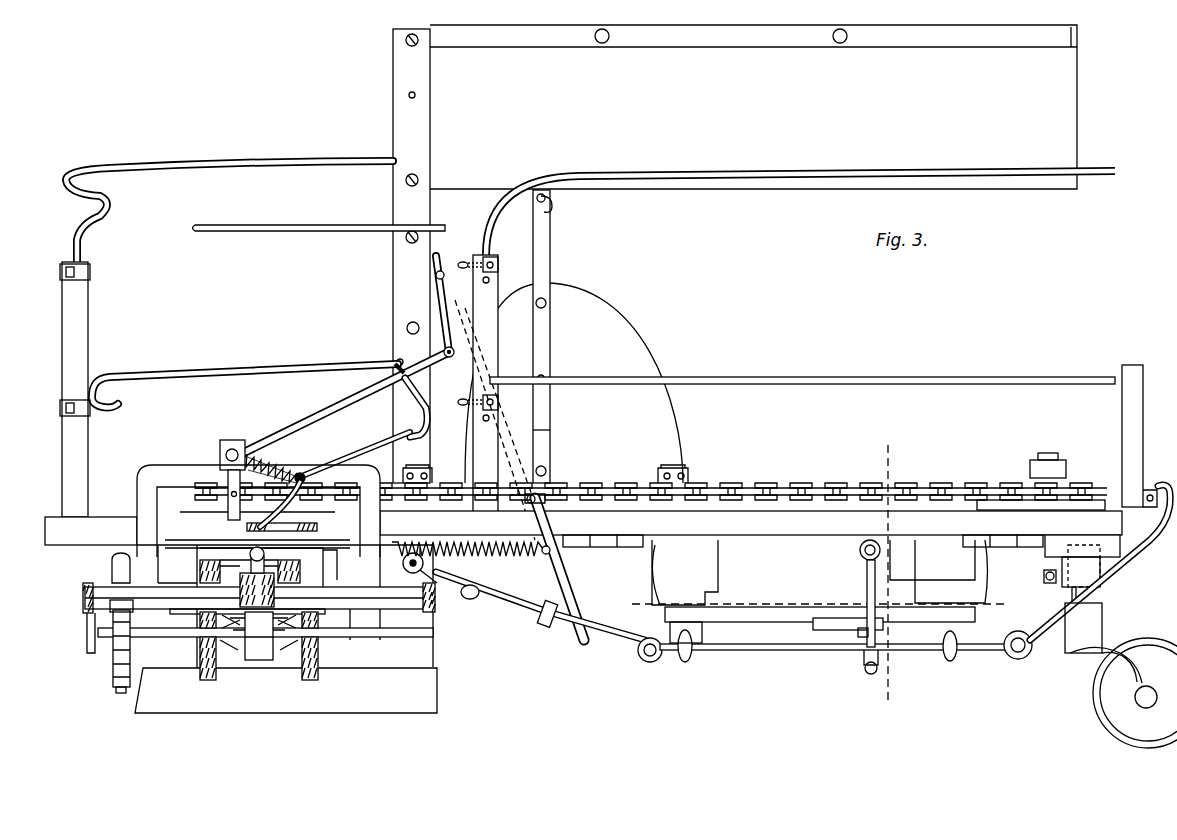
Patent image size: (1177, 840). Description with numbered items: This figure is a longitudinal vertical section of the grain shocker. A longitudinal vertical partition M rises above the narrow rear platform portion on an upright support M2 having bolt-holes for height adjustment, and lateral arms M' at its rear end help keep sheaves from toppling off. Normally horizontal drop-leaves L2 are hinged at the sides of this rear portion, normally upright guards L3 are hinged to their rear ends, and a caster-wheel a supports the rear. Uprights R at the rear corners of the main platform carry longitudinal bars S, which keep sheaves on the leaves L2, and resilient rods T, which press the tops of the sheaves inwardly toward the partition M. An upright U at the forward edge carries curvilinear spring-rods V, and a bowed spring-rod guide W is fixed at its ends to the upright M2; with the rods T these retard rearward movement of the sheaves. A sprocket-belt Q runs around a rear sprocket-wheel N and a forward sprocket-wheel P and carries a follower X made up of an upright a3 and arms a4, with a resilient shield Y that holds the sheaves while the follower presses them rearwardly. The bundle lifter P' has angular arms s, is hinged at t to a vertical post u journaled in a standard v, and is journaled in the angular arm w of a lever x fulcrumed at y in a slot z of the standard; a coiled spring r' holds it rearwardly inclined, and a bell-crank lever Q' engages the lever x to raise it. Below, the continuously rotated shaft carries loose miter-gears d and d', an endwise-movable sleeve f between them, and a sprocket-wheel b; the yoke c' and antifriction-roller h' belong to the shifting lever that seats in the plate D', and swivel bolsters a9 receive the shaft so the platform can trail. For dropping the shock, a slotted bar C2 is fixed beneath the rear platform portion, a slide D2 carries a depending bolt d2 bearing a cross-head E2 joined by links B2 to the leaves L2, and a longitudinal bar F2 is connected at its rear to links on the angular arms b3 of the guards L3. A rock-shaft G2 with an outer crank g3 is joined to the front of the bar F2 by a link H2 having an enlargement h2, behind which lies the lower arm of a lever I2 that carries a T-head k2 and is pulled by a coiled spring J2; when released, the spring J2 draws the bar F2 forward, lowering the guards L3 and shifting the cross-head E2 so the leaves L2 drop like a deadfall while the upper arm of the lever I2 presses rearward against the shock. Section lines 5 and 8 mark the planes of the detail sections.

The longitudinal vertical partition M is at (753, 107).
The lateral arms M' is at (1050, 53).
The upright support M2 is at (432, 174).
The resilient rods T is at (850, 178).
The curvilinear spring-rods V is at (180, 168).
The guide W is at (340, 232).
The upright U is at (90, 466).
The resilient shield Y is at (680, 428).
The follower X is at (552, 344).
The arms a4 is at (550, 205).
The upright a3 is at (555, 436).
The uprights R is at (494, 357).
The longitudinal bars S is at (760, 386).
The guards L3 is at (1145, 464).
The T-head k2 is at (443, 262).
The bundle lifter P' is at (346, 402).
The angular arms s is at (448, 358).
The angular arm w is at (430, 412).
The lever x is at (422, 444).
The slot z is at (336, 468).
The standard v is at (372, 470).
The hinged connection t is at (231, 441).
The coiled spring r' is at (272, 443).
The fulcrum y is at (302, 474).
The sprocket-belt Q is at (651, 478).
The sprocket-wheel N is at (1068, 480).
The drop-leaves L2 is at (750, 527).
The sprocket-wheel P is at (199, 458).
The vertical post u is at (232, 512).
The bell-crank lever Q' is at (296, 511).
The miter-gear d is at (286, 712).
The swivel bolsters a9 is at (185, 558).
The antifriction-roller h' is at (250, 631).
The plate D' is at (258, 622).
The sleeve f is at (257, 645).
The yoke c' is at (262, 652).
The miter-gear d' is at (260, 655).
The rock-shaft G2 is at (410, 575).
The sprocket-wheel b is at (122, 694).
The coiled spring J2 is at (497, 562).
The lever I2 is at (565, 576).
The link H2 is at (470, 602).
The outer crank g3 is at (463, 603).
The enlargement h2 is at (550, 634).
The slotted bar C2 is at (712, 562).
The longitudinal bar F2 is at (775, 640).
The section line 8 is at (810, 602).
The slide D2 is at (832, 630).
The links B2 is at (876, 578).
The cross-head E2 is at (862, 640).
The bolt d2 is at (868, 670).
The section line 5 is at (888, 571).
The angular arms b3 is at (1164, 503).
The caster-wheel a is at (1121, 675).